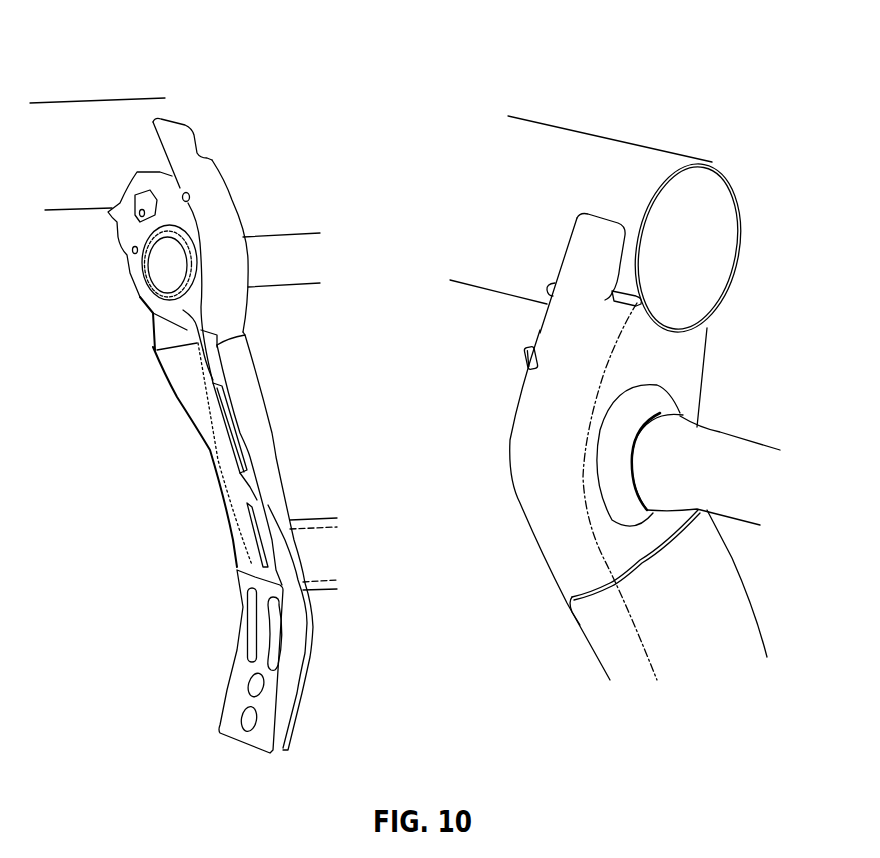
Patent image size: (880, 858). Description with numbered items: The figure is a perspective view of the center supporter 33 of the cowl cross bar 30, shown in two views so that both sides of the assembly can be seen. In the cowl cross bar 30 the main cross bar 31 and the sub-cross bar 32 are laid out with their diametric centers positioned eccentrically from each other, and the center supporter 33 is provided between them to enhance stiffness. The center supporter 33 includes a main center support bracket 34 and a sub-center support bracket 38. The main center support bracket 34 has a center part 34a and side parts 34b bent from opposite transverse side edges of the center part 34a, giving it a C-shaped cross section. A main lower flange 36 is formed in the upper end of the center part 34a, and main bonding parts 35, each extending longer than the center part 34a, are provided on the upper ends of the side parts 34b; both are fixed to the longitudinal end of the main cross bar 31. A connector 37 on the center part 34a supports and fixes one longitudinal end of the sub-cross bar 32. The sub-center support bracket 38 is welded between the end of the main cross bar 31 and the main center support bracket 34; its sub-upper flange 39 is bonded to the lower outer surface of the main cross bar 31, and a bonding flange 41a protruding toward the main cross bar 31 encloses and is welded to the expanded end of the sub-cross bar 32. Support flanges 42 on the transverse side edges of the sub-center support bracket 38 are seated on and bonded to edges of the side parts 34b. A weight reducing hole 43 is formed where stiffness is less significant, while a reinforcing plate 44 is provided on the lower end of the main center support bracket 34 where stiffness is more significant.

The cowl cross bar 30 is at (310, 174).
The main cross bar 31 is at (97, 104).
The sub-cross bar 32 is at (290, 276).
The center supporter 33 is at (57, 358).
The main center support bracket 34 is at (147, 354).
The center part 34a is at (572, 597).
The side parts 34b is at (553, 545).
The main bonding parts 35 is at (168, 127).
The main lower flange 36 is at (635, 288).
The connector 37 is at (663, 395).
The sub-center support bracket 38 is at (146, 317).
The sub-upper flange 39 is at (128, 210).
The bonding flange 41a is at (178, 262).
The support flanges 42 is at (190, 194).
The weight reducing hole 43 is at (243, 458).
The reinforcing plate 44 is at (238, 677).